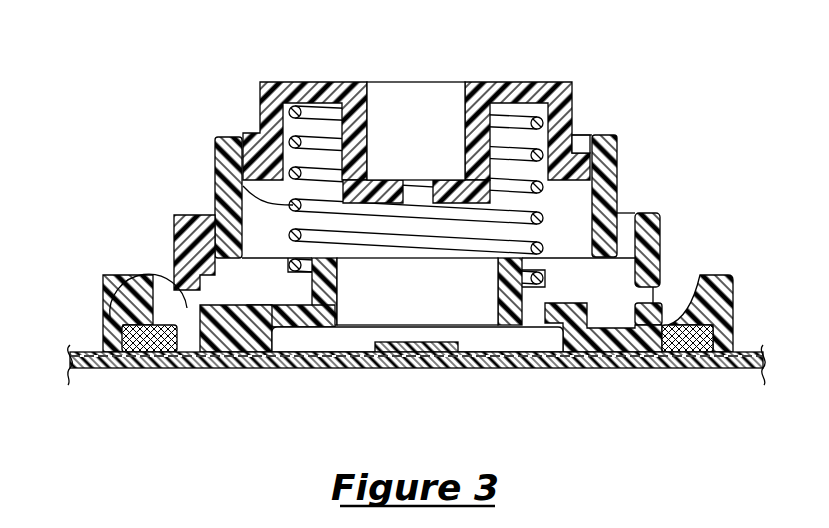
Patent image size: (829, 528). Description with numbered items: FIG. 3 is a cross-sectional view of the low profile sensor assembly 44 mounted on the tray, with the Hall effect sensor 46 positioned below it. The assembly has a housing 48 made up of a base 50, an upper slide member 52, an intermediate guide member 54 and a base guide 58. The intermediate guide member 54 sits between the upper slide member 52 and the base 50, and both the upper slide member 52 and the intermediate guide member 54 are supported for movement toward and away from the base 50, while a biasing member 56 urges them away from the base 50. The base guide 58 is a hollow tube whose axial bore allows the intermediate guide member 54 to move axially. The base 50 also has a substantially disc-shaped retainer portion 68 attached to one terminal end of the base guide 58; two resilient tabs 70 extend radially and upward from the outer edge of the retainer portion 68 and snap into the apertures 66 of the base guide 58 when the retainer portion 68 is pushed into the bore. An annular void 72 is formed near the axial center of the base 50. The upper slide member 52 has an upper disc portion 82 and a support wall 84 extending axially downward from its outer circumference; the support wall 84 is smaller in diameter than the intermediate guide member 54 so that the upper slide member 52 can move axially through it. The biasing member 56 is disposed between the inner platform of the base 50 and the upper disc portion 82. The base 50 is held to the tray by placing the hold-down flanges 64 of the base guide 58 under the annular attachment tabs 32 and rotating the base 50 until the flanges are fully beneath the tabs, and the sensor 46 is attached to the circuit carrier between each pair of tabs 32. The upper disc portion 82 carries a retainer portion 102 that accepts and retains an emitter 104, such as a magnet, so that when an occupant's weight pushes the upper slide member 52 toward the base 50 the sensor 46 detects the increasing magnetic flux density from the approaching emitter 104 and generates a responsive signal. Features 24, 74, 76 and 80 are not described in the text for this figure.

The base plate 24 is at (500, 346).
The annular attachment tabs 32 is at (715, 296).
The low profile sensor assembly 44 is at (668, 128).
The sensor 46 is at (410, 346).
The housing 48 is at (666, 214).
The base 50 is at (650, 272).
The upper slide member 52 is at (562, 113).
The intermediate guide member 54 is at (618, 160).
The biasing member 56 is at (216, 162).
The base guide 58 is at (180, 244).
The hold-down flanges 64 is at (108, 341).
The apertures 66 is at (108, 300).
The retainer portion 68 is at (605, 345).
The resilient tabs 70 is at (656, 308).
The annular void 72 is at (305, 345).
The support plate 74 is at (258, 300).
The left support block 76 is at (222, 332).
The central block 80 is at (340, 289).
The upper disc portion 82 is at (510, 97).
The support wall 84 is at (282, 100).
The retainer portion 102 is at (355, 130).
The emitter 104 is at (408, 112).